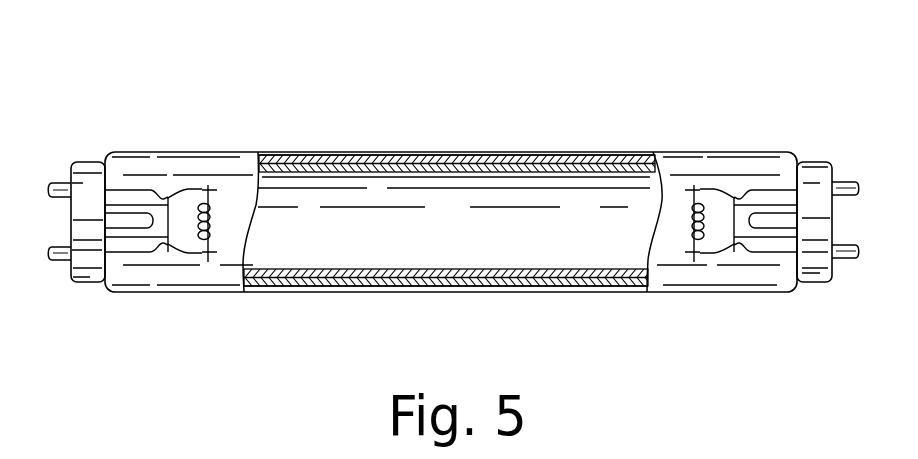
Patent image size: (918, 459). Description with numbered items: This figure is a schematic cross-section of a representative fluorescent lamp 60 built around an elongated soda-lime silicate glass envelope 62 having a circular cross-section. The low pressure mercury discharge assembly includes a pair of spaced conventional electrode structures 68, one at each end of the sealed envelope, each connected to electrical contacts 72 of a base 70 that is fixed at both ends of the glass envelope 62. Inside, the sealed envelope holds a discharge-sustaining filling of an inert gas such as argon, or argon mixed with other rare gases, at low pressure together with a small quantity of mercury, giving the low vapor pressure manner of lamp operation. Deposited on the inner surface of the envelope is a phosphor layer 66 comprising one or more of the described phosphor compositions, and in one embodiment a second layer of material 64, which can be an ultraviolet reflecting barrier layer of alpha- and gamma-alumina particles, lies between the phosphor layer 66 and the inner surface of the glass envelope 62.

The fluorescent lamp 60 is at (182, 70).
The glass tube 62 is at (380, 151).
The phosphor coating 64 is at (495, 153).
The reflective layer 66 is at (593, 160).
The filament electrode 68 is at (210, 223).
The end cap 70 is at (90, 283).
The contact pin 72 is at (49, 182).